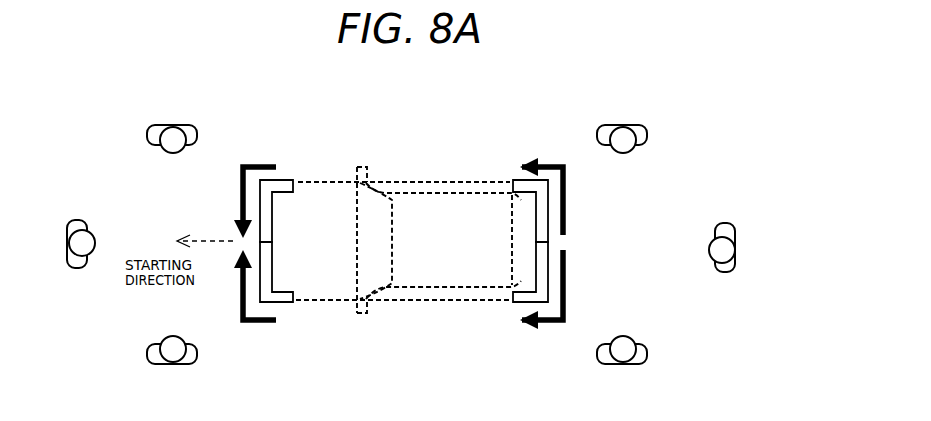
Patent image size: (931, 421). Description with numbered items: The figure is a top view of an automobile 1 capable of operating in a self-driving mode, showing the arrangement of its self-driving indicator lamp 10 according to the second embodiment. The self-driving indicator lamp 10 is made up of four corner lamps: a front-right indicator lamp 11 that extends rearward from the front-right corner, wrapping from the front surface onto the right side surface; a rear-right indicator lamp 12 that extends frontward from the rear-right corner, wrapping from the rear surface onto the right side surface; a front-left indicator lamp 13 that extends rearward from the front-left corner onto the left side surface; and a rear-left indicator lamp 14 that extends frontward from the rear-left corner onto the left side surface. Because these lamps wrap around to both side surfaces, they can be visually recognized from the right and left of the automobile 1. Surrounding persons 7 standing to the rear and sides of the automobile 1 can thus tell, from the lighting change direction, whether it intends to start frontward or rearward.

The automobile 1 is at (393, 300).
The pedestrian 7 is at (198, 138).
The self-driving indicator lamp 10 is at (407, 245).
The front-right indicator lamp 11 is at (266, 188).
The rear-right indicator lamp 12 is at (543, 190).
The front-left indicator lamp 13 is at (270, 302).
The rear-left indicator lamp 14 is at (548, 303).